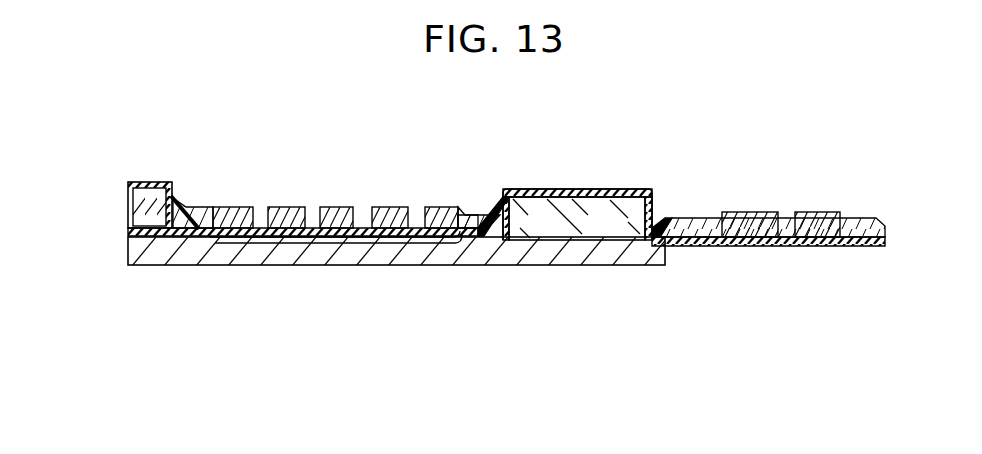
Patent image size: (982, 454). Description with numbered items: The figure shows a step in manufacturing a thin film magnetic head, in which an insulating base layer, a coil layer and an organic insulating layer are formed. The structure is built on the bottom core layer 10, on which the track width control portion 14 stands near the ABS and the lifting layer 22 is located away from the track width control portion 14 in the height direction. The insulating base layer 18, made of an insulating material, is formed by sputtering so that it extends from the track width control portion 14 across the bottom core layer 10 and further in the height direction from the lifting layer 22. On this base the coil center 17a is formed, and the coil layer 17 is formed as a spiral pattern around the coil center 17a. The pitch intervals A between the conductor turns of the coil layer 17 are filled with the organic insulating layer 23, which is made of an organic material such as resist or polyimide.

The bottom core layer 10 is at (562, 250).
The track width control portion 14 is at (124, 206).
The coil layer 17 is at (347, 242).
The coil center 17a is at (750, 246).
The insulating base layer 18 is at (466, 240).
The lifting layer 22 is at (588, 212).
The organic insulating layer 23 is at (194, 213).
The pitch intervals A is at (309, 205).